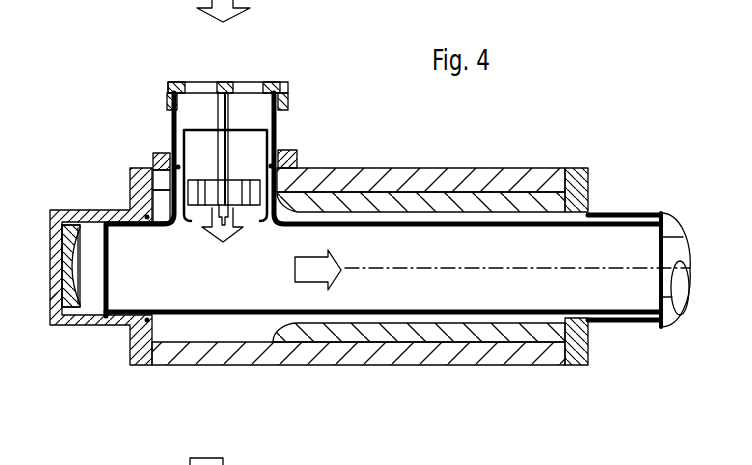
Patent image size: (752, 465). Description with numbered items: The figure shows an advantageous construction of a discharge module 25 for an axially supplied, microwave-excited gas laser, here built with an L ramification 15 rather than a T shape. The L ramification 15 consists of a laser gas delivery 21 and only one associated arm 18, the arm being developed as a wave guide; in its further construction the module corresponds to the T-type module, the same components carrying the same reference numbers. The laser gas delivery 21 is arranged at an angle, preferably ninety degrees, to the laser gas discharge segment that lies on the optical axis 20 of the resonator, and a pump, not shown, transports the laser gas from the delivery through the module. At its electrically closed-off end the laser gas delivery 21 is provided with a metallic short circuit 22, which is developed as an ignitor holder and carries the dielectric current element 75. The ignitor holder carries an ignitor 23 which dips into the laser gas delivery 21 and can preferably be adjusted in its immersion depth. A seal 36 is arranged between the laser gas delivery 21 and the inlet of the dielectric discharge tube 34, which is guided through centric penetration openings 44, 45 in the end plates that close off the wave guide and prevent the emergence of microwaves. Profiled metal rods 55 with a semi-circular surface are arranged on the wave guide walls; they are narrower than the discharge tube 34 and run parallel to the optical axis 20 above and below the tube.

The L ramification 15 is at (263, 242).
The arm 18 is at (383, 167).
The optical axis 20 is at (378, 273).
The laser gas delivery 21 is at (288, 94).
The metallic short circuit 22 is at (227, 91).
The ignitor 23 is at (220, 104).
The discharge module 25 is at (314, 129).
The discharge tube 34 is at (414, 198).
The seal 36 is at (170, 161).
The centric penetration opening 44 is at (577, 172).
The centric penetration opening 45 is at (589, 338).
The profiled metal rods 55 is at (463, 196).
The dielectric current element 75 is at (212, 183).